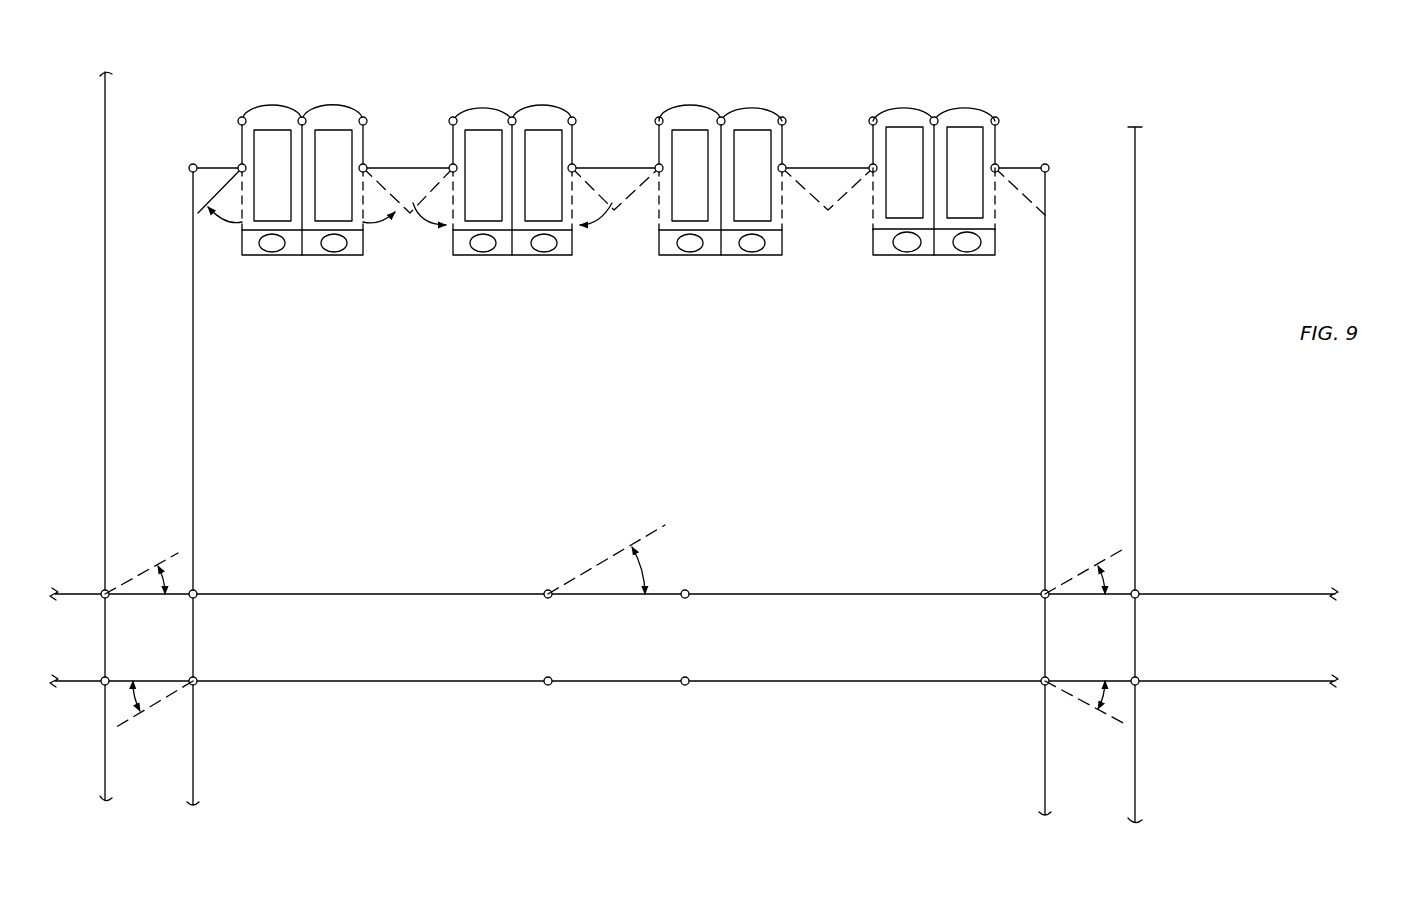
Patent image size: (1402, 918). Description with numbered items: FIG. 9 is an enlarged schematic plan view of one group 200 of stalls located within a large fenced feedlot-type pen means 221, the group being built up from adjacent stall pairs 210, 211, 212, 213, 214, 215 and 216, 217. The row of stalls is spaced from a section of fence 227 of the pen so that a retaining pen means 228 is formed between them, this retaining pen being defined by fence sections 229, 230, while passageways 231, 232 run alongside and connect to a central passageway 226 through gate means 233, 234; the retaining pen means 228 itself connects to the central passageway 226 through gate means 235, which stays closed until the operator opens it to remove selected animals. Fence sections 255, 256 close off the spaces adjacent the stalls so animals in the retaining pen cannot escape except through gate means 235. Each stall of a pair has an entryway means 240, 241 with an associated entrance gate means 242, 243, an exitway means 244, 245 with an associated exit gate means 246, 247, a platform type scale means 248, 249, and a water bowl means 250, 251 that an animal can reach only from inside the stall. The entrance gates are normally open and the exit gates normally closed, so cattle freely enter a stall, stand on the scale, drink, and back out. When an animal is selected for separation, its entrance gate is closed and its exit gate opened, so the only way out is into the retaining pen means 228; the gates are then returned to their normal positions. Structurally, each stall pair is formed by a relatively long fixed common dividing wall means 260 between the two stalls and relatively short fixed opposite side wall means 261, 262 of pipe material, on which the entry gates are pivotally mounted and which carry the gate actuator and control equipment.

The group of stalls 200 is at (248, 103).
The stall 210 is at (242, 140).
The stall 211 is at (366, 122).
The stall 212 is at (453, 118).
The stall 213 is at (573, 118).
The stall 214 is at (659, 118).
The stall 215 is at (784, 120).
The stall 216 is at (873, 118).
The stall 217 is at (996, 119).
The pen means 221 is at (1208, 515).
The central passageway 226 is at (368, 645).
The section of fence 227 is at (398, 592).
The retaining pen means 228 is at (628, 428).
The fence section 229 is at (192, 172).
The fence section 230 is at (1048, 170).
The passageway 231 is at (184, 399).
The passageway 232 is at (1060, 381).
The gate means 233 is at (150, 597).
The gate means 234 is at (1060, 597).
The gate means 235 is at (620, 597).
The entryway means 240 is at (686, 111).
The entryway means 241 is at (748, 111).
The entrance gate means 242 is at (900, 108).
The entrance gate means 243 is at (957, 105).
The exitway means 244 is at (230, 209).
The exitway means 245 is at (368, 223).
The exit gate means 246 is at (873, 213).
The exit gate means 247 is at (996, 222).
The platform type scale means 248 is at (482, 206).
The platform type scale means 249 is at (548, 206).
The water bowl means 250 is at (907, 252).
The water bowl means 251 is at (967, 252).
The fence section 255 is at (190, 165).
The fence section 256 is at (400, 166).
The common dividing wall means 260 is at (935, 155).
The side wall means 261 is at (872, 158).
The side wall means 262 is at (996, 156).